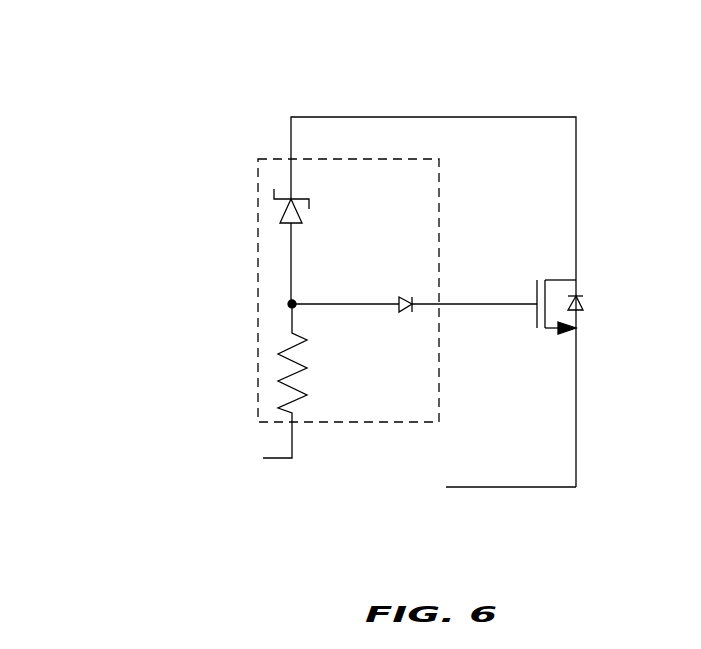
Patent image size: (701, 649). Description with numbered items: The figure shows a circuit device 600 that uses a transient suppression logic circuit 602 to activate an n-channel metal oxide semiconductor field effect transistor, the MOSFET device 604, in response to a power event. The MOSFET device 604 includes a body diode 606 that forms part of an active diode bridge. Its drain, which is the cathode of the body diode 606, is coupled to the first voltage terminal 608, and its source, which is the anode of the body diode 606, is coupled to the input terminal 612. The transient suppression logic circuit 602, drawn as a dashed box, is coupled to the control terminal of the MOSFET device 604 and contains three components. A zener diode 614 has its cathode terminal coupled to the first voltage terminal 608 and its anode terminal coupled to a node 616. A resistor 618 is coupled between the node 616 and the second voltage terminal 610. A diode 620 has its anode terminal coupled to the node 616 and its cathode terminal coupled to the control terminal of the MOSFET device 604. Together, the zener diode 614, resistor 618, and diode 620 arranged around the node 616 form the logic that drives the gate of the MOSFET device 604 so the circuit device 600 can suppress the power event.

The circuit device 600 is at (170, 44).
The transient suppression logic circuit 602 is at (258, 159).
The MOSFET device 604 is at (535, 250).
The body diode 606 is at (587, 297).
The first voltage terminal (Vpos) 608 is at (352, 117).
The second voltage terminal (Vneg) 610 is at (278, 460).
The input terminal (Vin) 612 is at (480, 487).
The zener diode 614 is at (282, 222).
The node 616 is at (291, 303).
The resistor 618 is at (280, 378).
The diode 620 is at (409, 298).